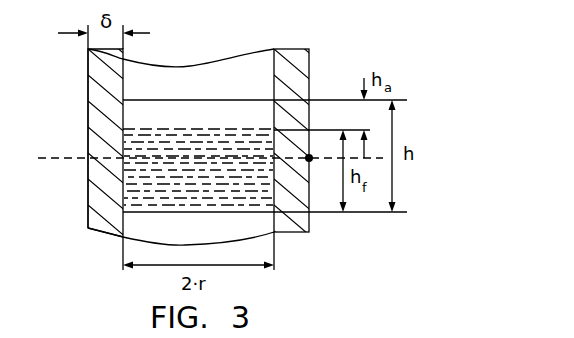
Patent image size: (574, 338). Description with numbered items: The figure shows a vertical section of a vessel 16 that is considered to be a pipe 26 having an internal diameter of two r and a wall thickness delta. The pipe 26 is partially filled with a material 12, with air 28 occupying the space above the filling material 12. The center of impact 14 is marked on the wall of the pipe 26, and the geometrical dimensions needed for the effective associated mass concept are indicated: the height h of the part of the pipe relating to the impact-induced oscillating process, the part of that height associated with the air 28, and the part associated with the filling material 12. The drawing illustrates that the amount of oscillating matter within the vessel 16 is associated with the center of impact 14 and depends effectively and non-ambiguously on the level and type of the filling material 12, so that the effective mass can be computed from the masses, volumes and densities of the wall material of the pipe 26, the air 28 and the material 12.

The material 12 is at (258, 205).
The center of impact 14 is at (309, 158).
The vessel 16 is at (88, 76).
The pipe 26 is at (66, 202).
The air 28 is at (168, 118).